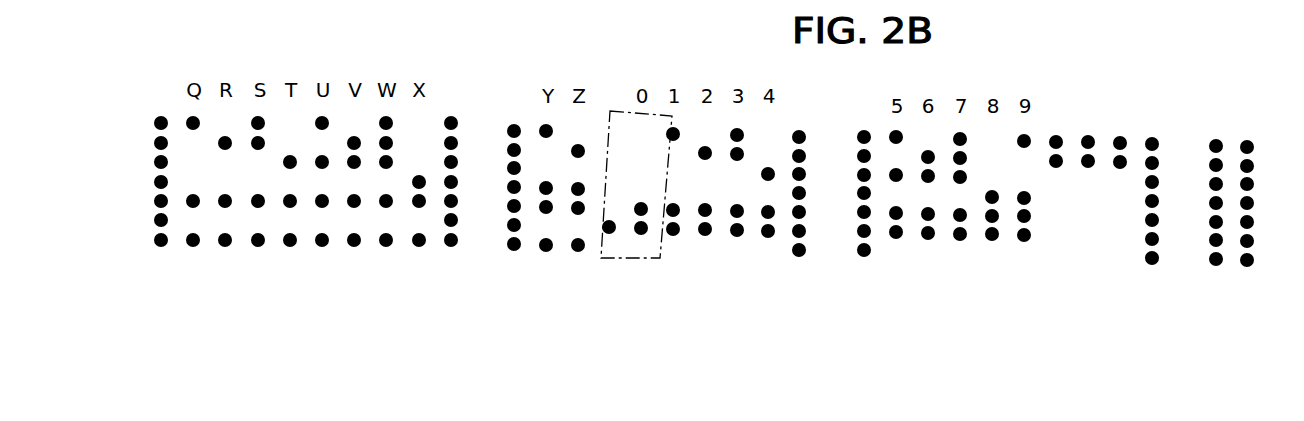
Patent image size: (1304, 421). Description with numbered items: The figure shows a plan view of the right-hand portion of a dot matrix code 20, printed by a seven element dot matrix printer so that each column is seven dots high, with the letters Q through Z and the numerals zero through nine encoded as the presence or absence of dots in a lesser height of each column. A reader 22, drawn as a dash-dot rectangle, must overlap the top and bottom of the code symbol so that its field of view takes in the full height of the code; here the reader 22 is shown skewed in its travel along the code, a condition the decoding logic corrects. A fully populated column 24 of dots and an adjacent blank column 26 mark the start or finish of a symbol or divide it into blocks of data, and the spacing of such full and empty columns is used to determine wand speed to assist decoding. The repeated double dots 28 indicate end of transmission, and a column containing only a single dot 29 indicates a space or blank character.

The dot matrix code 20 is at (608, 97).
The reader 22 is at (660, 258).
The fully populated column 24 is at (1152, 263).
The blank column 26 is at (485, 136).
The repeated double dots 28 is at (1089, 136).
The single dot 29 is at (609, 233).